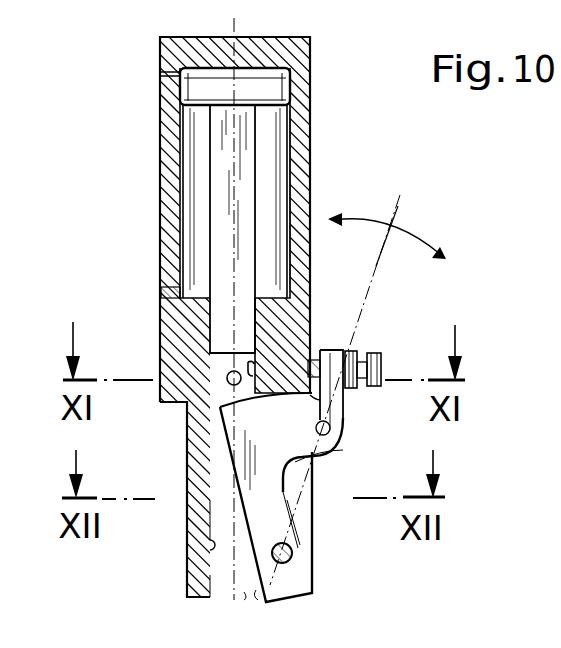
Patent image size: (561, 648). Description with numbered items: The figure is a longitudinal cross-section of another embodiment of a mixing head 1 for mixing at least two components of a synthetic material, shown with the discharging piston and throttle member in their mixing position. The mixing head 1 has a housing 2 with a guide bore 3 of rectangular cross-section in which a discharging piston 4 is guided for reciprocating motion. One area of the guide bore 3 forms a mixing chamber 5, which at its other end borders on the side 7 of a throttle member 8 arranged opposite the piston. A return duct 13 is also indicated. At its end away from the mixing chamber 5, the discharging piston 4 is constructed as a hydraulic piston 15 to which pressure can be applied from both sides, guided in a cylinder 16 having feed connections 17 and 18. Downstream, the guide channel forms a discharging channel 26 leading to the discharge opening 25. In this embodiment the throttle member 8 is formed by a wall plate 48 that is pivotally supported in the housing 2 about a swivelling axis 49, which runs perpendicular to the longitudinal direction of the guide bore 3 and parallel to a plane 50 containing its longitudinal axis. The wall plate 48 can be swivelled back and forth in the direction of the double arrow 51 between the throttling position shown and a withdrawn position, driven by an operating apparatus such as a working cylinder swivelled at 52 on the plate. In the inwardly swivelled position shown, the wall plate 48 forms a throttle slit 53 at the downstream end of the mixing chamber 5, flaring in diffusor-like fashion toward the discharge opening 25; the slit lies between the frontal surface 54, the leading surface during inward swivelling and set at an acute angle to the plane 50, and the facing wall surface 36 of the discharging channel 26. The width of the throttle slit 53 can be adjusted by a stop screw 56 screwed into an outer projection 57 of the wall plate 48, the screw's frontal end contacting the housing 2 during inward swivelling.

The mixing head 1 is at (312, 96).
The housing 2 is at (304, 158).
The guide bore 3 is at (256, 372).
The discharging piston 4 is at (222, 203).
The mixing chamber 5 is at (218, 368).
The side of the throttle member 7 is at (245, 402).
The throttle member 8 is at (222, 452).
The return duct 13 is at (560, 558).
The hydraulic piston 15 is at (194, 90).
The cylinder 16 is at (194, 142).
The feed connection 17 is at (180, 72).
The feed connection 18 is at (168, 292).
The discharge opening 25 is at (252, 600).
The discharging channel 26 is at (225, 577).
The wall surface 36 is at (210, 545).
The wall plate 48 is at (300, 458).
The swivelling axis 49 is at (292, 556).
The plane 50 is at (232, 517).
The double arrow 51 is at (368, 220).
The pivot point 52 is at (330, 428).
The throttle slit 53 is at (217, 417).
The frontal surface 54 is at (257, 600).
The stop screw 56 is at (375, 353).
The outer projection 57 is at (331, 352).